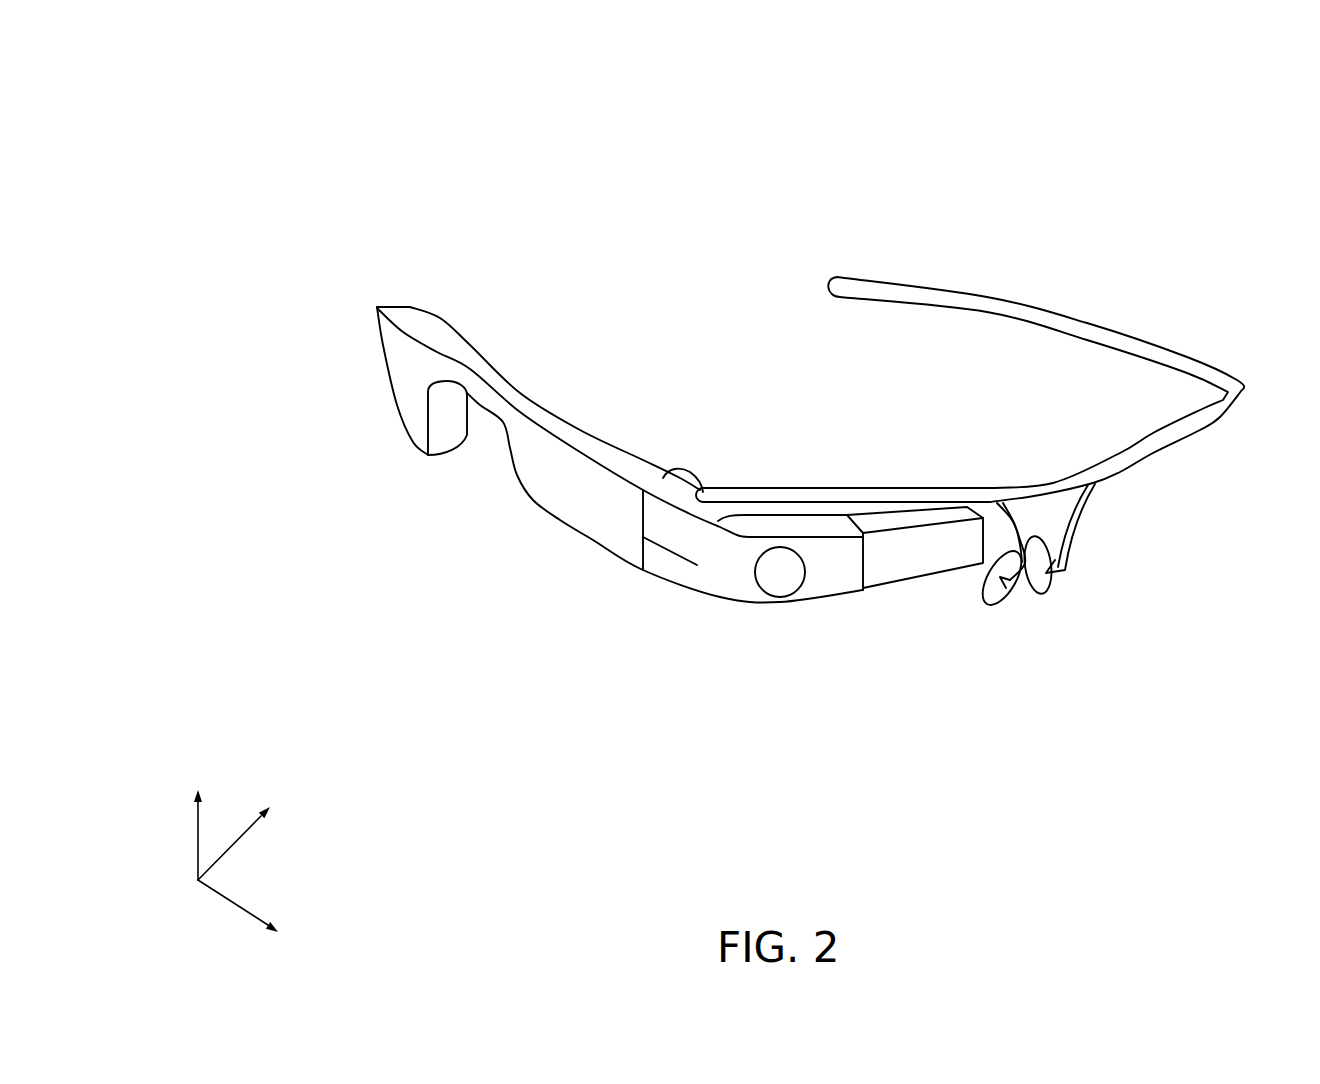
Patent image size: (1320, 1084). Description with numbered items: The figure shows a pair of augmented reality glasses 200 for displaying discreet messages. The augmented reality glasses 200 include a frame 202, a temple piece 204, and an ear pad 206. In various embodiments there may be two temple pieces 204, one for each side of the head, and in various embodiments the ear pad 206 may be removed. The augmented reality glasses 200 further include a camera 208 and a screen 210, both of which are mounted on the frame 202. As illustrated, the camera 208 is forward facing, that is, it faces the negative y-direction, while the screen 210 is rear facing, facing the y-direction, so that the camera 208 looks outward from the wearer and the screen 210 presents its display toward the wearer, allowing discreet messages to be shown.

The augmented reality glasses 200 is at (222, 130).
The frame 202 is at (413, 307).
The temple piece 204 is at (903, 295).
The ear pad 206 is at (1048, 577).
The camera 208 is at (780, 580).
The screen 210 is at (644, 448).